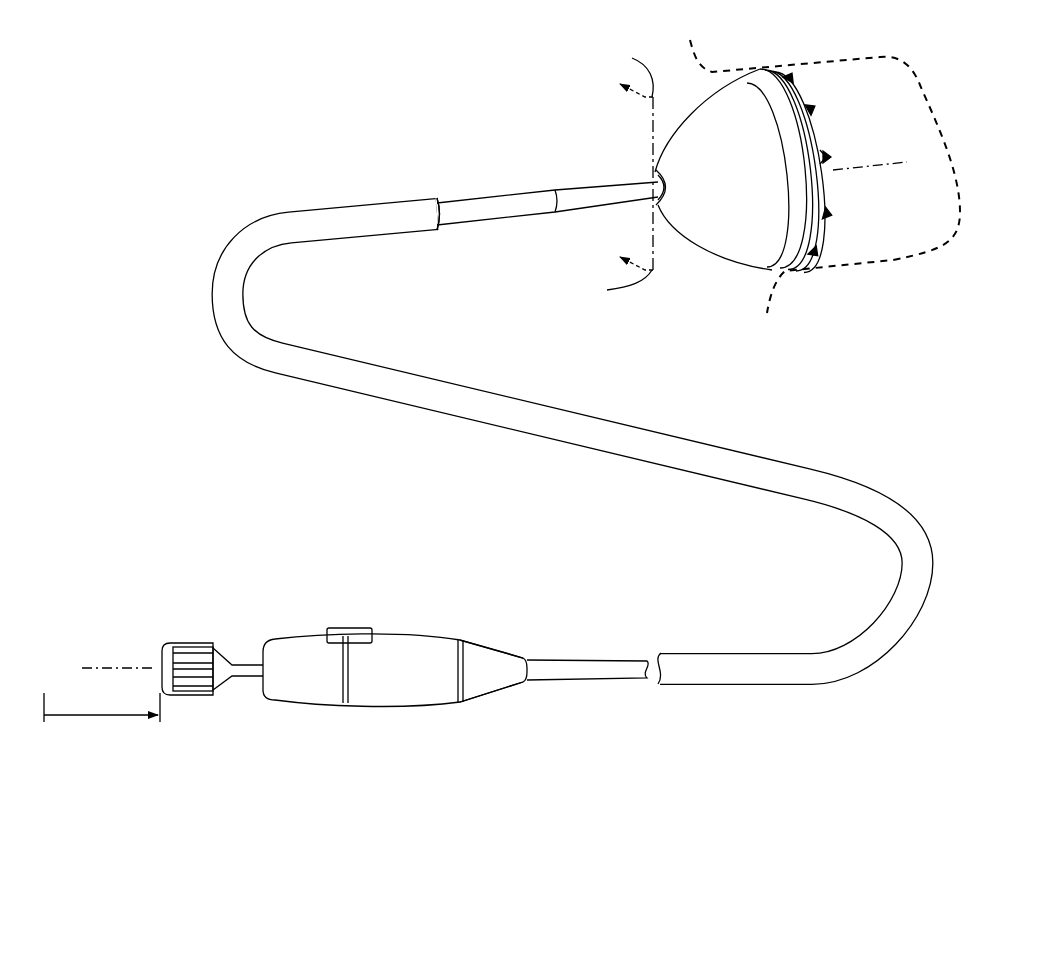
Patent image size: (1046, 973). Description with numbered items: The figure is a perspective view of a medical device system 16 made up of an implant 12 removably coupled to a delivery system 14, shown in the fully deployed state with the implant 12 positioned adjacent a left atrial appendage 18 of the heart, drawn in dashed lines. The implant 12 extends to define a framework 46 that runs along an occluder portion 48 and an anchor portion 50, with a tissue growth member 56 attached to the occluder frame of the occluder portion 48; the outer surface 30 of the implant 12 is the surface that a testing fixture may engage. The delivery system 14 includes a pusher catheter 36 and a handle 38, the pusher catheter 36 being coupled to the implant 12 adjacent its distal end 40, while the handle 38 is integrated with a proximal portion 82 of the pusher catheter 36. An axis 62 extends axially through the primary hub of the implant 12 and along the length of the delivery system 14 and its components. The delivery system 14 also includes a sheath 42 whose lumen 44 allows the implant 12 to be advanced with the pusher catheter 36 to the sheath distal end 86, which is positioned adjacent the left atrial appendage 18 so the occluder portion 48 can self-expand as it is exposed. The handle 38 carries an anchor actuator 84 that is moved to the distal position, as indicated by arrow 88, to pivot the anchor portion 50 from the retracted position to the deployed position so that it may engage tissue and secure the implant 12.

The implant 12 is at (703, 88).
The delivery system 14 is at (205, 212).
The medical device system 16 is at (243, 85).
The left atrial appendage 18 is at (895, 58).
The outer surface 30 is at (710, 195).
The pusher catheter 36 is at (506, 198).
The handle 38 is at (418, 712).
The distal end 40 is at (655, 180).
The sheath 42 is at (804, 455).
The lumen 44 is at (660, 688).
The framework 46 is at (829, 150).
The occluder portion 48 is at (765, 276).
The anchor portion 50 is at (848, 138).
The tissue growth member 56 is at (722, 240).
The axis 62 is at (118, 668).
The proximal portion 82 is at (527, 656).
The anchor actuator 84 is at (245, 655).
The sheath distal end 86 is at (440, 234).
The arrow 88 is at (100, 717).